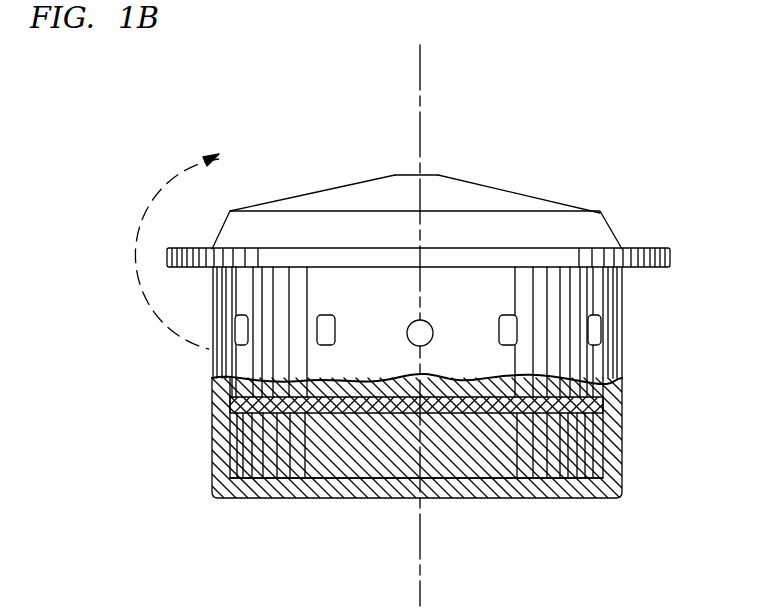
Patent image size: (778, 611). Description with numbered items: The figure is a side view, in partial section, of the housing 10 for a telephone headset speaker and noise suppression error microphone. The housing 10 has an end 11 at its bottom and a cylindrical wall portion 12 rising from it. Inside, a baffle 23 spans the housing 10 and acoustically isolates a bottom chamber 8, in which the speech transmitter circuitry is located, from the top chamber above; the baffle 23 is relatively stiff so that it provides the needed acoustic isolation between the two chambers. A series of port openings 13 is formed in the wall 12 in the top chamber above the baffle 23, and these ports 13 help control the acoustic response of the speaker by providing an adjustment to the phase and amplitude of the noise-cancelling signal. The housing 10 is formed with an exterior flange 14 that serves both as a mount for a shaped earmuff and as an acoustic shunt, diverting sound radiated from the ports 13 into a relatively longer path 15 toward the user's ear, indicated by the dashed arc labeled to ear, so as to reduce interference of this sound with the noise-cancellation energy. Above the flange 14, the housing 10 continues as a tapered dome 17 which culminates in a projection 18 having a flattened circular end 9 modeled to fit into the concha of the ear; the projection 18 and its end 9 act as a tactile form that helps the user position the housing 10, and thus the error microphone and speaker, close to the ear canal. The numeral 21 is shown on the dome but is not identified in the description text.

The bottom chamber 8 is at (593, 448).
The flattened circular end 9 is at (443, 175).
The housing 10 is at (622, 498).
The end 11 is at (526, 498).
The cylindrical wall portion 12 is at (624, 360).
The port openings 13 is at (598, 330).
The exterior flange 14 is at (670, 258).
The path 15 is at (132, 250).
The tapered dome 17 is at (620, 229).
The projection 18 is at (513, 192).
The dome slope 21 is at (343, 183).
The baffle 23 is at (602, 403).